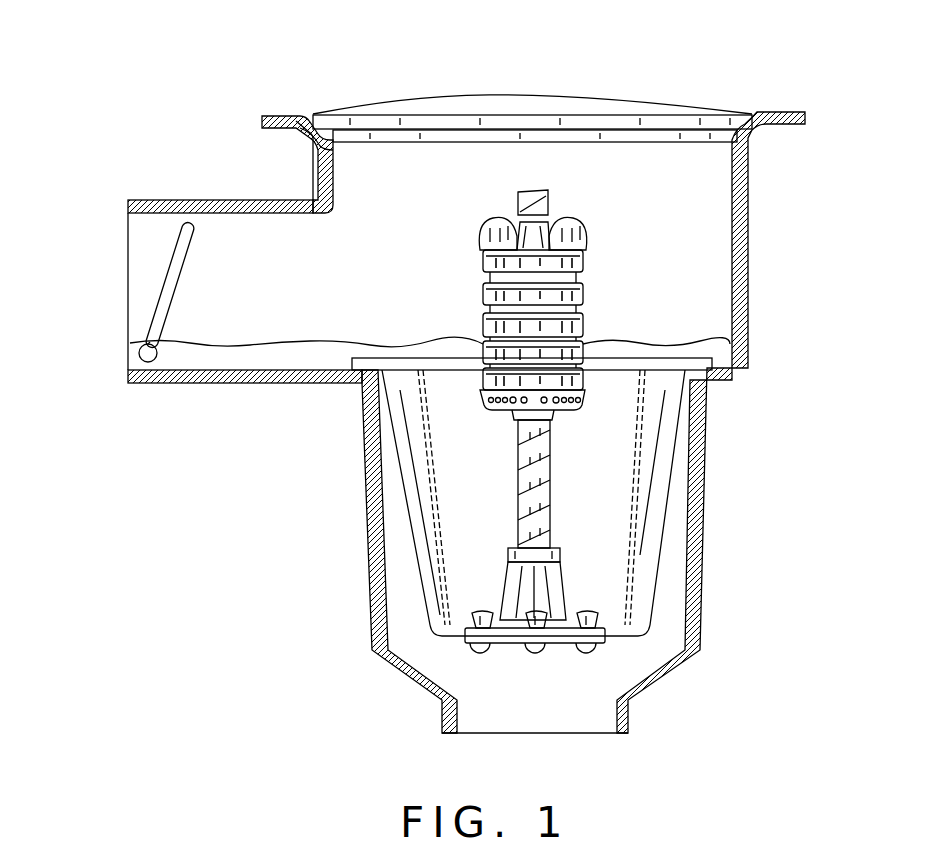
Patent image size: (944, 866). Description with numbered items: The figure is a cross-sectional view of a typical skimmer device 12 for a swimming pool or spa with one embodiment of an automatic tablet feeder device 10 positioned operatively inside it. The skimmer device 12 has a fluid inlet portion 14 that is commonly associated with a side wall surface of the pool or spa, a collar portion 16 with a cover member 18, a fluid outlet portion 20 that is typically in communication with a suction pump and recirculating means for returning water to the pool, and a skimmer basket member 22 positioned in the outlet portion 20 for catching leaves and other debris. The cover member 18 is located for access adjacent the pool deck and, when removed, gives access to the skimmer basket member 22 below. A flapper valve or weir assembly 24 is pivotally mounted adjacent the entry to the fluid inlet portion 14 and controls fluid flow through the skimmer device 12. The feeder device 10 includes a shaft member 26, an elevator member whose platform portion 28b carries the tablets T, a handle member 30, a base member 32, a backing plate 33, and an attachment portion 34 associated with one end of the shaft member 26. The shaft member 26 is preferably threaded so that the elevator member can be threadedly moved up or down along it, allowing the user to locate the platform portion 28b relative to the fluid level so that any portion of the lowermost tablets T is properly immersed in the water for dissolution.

The automatic tablet feeder device 10 is at (604, 280).
The skimmer device 12 is at (288, 100).
The fluid inlet portion 14 is at (145, 265).
The collar portion 16 is at (300, 142).
The cover member 18 is at (600, 96).
The fluid outlet portion 20 is at (630, 722).
The skimmer basket member 22 is at (660, 530).
The flapper valve or weir assembly 24 is at (185, 272).
The shaft member 26 is at (553, 484).
The platform portion 28b is at (604, 396).
The handle member 30 is at (582, 226).
The base member 32 is at (568, 580).
The backing plate 33 is at (566, 650).
The attachment portion 34 is at (508, 556).
The tablets T is at (483, 292).